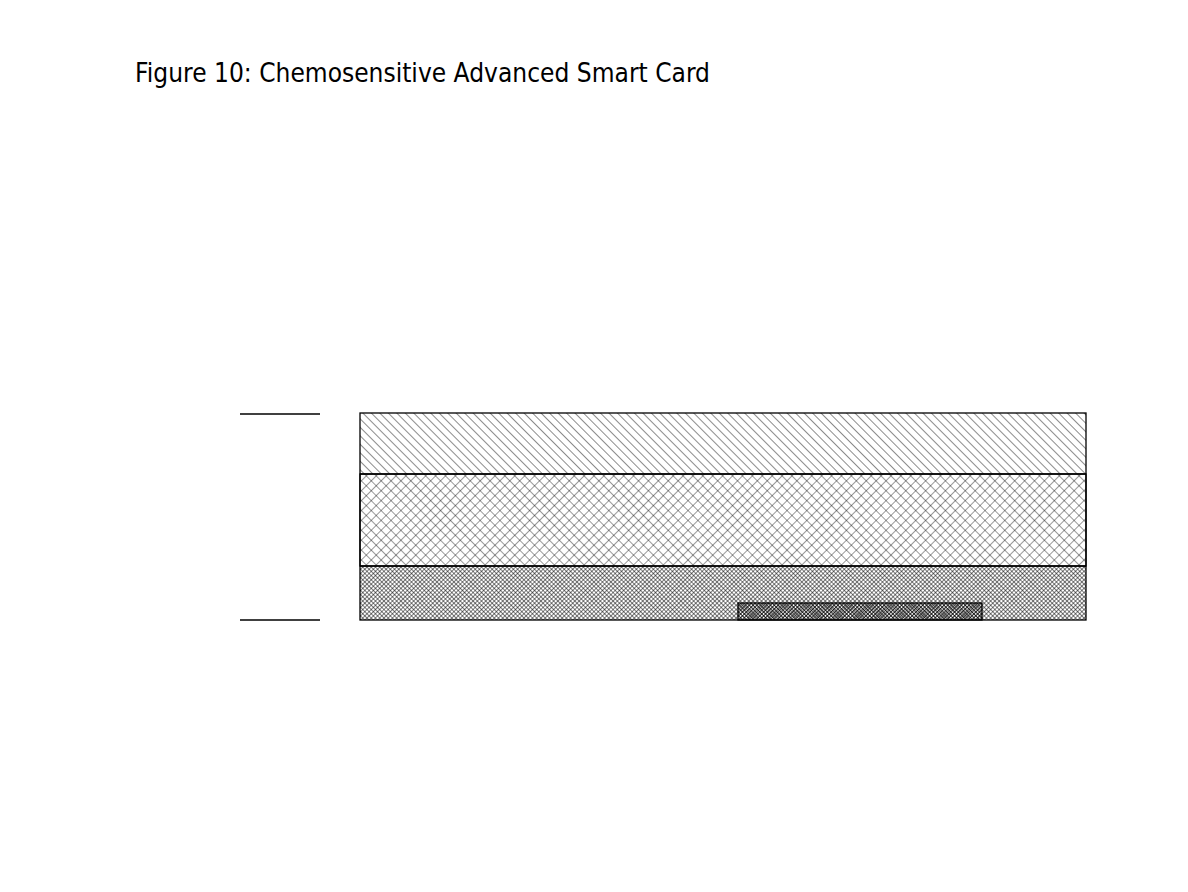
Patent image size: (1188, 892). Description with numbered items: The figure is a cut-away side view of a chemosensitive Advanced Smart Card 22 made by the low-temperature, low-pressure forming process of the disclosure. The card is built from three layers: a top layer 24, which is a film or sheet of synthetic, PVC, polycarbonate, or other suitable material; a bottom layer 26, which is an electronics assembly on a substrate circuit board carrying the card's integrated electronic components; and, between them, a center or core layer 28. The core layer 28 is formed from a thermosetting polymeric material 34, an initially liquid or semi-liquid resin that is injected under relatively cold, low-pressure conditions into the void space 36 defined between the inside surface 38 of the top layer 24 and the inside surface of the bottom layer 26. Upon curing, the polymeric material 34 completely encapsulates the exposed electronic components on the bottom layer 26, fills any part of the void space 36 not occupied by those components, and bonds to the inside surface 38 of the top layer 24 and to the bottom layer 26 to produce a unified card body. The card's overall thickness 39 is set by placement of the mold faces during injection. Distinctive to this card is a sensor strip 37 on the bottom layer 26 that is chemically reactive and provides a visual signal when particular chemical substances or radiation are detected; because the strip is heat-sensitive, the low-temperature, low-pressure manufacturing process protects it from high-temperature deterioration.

The Advanced Smart Card 22 is at (472, 388).
The top layer 24 is at (763, 447).
The bottom layer 26 is at (605, 614).
The center or core layer 28 is at (1054, 490).
The thermosetting polymeric material 34 is at (790, 519).
The void space 36 is at (376, 462).
The sensor strip 37 is at (860, 631).
The inside surface of the top layer 38 is at (926, 484).
The thickness 39 is at (280, 610).